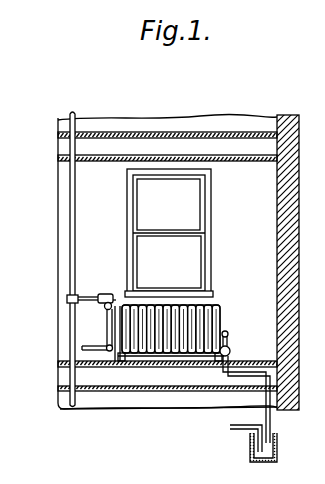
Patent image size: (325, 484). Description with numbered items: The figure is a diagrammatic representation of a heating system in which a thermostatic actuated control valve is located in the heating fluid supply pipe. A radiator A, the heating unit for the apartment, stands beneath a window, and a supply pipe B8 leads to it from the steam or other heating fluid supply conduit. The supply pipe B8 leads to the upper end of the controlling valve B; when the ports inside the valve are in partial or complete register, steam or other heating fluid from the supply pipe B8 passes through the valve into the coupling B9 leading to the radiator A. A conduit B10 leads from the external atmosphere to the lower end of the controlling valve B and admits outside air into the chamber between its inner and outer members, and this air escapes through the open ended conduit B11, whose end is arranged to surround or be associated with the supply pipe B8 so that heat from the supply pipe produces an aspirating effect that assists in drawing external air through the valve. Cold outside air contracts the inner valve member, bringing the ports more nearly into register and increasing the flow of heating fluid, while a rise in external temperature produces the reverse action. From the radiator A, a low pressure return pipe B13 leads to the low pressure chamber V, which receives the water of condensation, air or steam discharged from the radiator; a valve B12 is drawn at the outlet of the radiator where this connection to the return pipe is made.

The radiator A is at (222, 327).
The controlling valve B is at (107, 338).
The supply pipe B8 is at (81, 296).
The coupling B9 is at (107, 296).
The conduit B10 is at (98, 350).
The open ended conduit B11 is at (100, 308).
The air valve B12 is at (229, 342).
The low pressure return pipe B13 is at (231, 352).
The low pressure chamber V is at (277, 446).